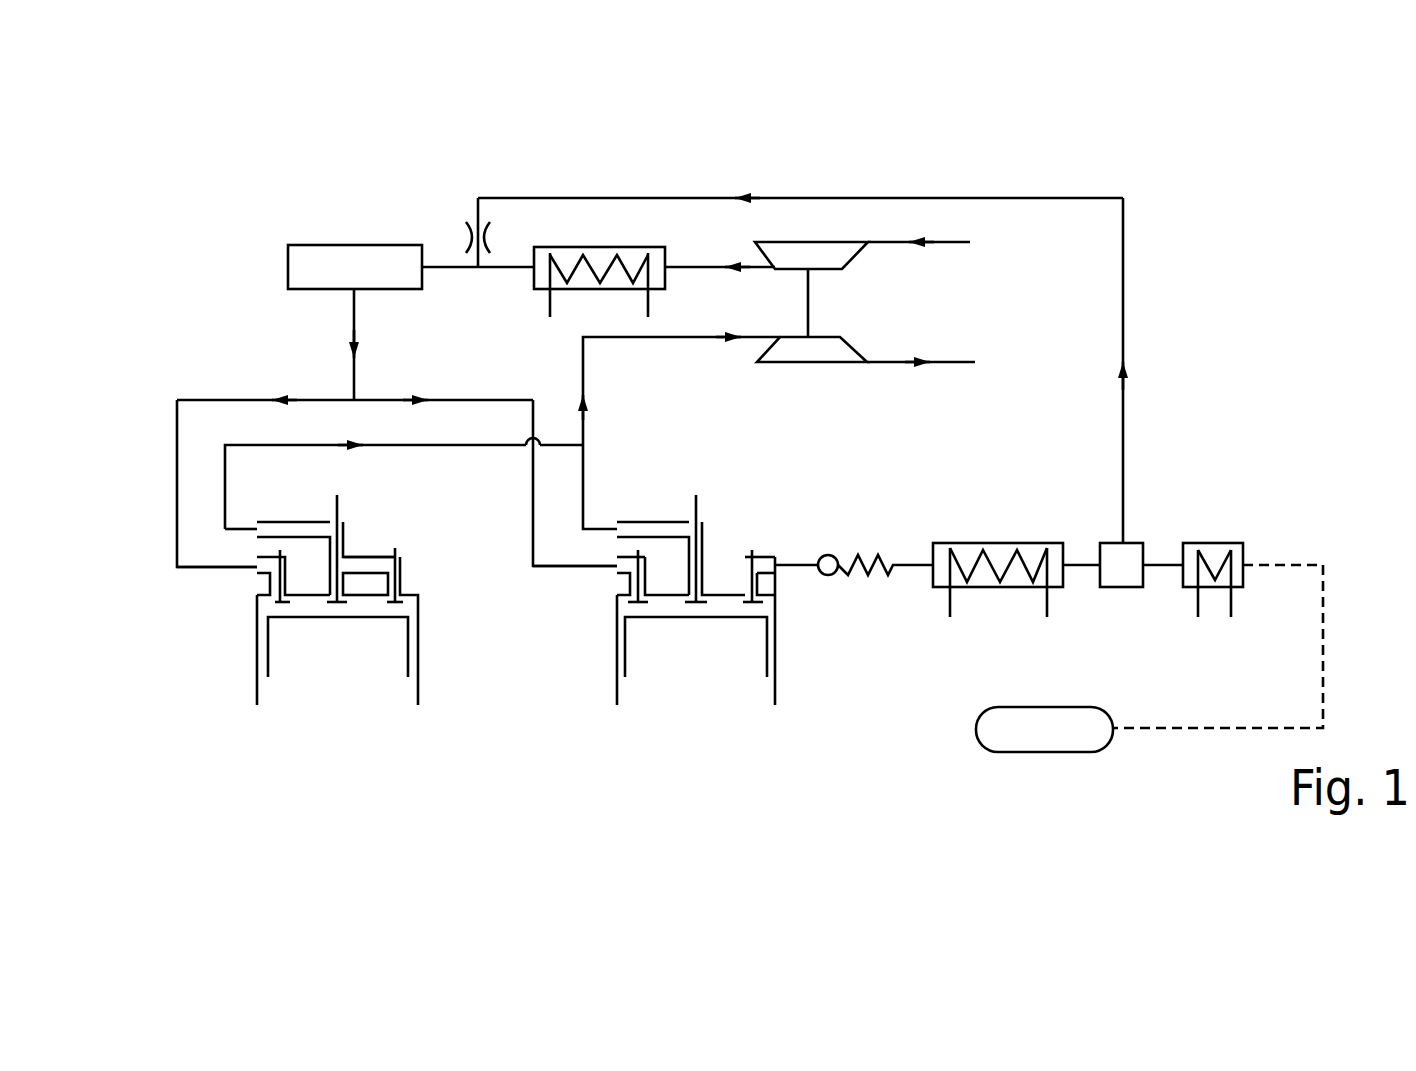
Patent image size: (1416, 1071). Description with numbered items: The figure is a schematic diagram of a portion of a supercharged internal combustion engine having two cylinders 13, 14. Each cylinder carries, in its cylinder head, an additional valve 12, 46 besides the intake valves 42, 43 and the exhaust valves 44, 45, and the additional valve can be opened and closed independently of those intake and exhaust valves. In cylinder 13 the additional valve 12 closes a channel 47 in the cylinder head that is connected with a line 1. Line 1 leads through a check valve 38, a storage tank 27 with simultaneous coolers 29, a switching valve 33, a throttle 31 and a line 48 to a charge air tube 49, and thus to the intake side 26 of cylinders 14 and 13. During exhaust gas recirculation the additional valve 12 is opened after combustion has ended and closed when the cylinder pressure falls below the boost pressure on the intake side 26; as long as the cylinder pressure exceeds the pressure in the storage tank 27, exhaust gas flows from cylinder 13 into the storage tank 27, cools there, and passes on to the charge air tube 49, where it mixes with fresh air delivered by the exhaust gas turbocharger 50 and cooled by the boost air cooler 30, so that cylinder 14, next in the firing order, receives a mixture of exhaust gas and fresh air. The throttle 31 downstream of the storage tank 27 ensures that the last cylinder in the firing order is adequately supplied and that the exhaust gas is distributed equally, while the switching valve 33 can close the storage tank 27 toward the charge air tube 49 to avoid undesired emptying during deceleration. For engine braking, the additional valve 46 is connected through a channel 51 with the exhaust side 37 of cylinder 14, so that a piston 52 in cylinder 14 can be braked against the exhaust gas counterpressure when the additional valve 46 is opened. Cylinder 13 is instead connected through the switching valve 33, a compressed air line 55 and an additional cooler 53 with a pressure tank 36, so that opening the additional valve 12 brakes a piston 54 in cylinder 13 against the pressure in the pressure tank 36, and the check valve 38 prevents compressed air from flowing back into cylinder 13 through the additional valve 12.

The line 1 is at (802, 567).
The additional valve 12 is at (753, 557).
The cylinder 13 is at (775, 693).
The cylinder 14 is at (258, 702).
The intake side 26 is at (238, 575).
The storage tank 27 is at (1016, 535).
The coolers 29 is at (950, 560).
The boost air cooler 30 is at (588, 262).
The throttle 31 is at (470, 232).
The switching valve 33 is at (1127, 560).
The pressure tank 36 is at (1019, 735).
The exhaust side 37 is at (355, 533).
The check valve 38 is at (833, 558).
The intake valve 42 is at (270, 597).
The intake valve 43 is at (638, 602).
The exhaust valve 44 is at (337, 602).
The exhaust valve 45 is at (693, 602).
The additional valve 46 is at (400, 580).
The channel 47 is at (750, 567).
The line 48 is at (448, 265).
The charge air tube 49 is at (310, 265).
The exhaust gas turbocharger 50 is at (815, 228).
The channel 51 is at (370, 567).
The piston 52 is at (410, 627).
The additional cooler 53 is at (1215, 548).
The piston 54 is at (768, 680).
The compressed air line 55 is at (1193, 728).